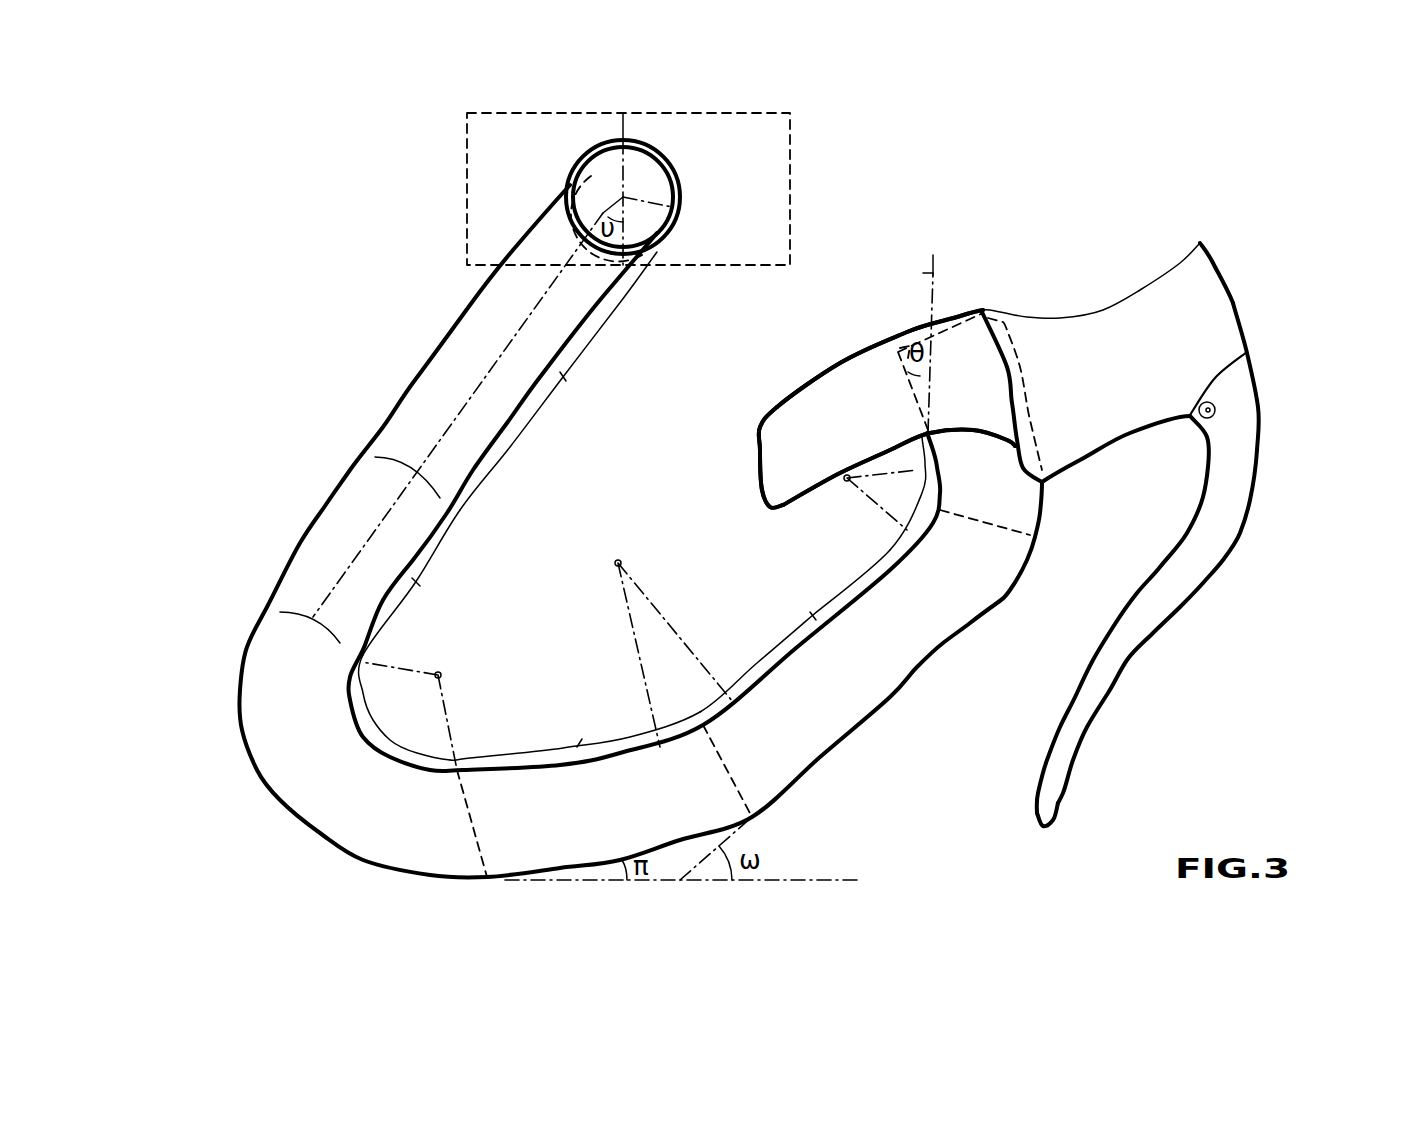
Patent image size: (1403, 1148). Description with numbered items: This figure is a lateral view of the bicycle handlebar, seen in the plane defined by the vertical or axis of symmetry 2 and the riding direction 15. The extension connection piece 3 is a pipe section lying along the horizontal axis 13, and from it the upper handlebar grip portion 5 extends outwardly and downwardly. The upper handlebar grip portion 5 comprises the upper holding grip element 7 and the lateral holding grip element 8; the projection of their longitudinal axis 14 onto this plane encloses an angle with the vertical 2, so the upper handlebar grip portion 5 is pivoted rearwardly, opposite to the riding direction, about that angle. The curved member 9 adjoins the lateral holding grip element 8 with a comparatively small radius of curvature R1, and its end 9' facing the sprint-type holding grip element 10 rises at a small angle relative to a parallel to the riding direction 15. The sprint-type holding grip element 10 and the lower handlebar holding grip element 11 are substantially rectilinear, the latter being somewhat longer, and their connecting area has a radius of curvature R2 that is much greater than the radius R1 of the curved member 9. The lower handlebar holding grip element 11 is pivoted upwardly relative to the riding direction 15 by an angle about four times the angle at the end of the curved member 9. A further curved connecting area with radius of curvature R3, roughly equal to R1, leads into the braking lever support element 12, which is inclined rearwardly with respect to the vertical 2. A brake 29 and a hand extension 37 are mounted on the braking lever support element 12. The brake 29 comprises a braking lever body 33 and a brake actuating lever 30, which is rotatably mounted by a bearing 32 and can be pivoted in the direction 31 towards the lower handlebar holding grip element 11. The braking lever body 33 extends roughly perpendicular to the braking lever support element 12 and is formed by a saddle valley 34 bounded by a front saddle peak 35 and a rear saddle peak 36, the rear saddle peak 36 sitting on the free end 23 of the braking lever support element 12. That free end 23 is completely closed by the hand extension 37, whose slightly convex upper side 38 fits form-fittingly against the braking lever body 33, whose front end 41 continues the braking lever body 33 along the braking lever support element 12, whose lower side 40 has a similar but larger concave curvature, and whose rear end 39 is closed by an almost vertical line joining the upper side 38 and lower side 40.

The axis of symmetry 2 is at (466, 190).
The extension connection piece 3 is at (683, 182).
The upper handlebar grip portion 5 is at (323, 498).
The upper holding grip element 7 is at (566, 381).
The lateral holding grip element 8 is at (420, 586).
The curved member 9 is at (404, 707).
The end of the curved member 9' is at (498, 845).
The sprint-type holding grip element 10 is at (586, 747).
The lower handlebar holding grip element 11 is at (816, 613).
The braking lever support element 12 is at (923, 472).
The horizontal axis 13 is at (672, 207).
The longitudinal axis 14 is at (477, 378).
The riding direction 15 is at (740, 112).
The free end of the braking lever support element 23 is at (960, 320).
The brake 29 is at (1220, 580).
The brake actuating lever 30 is at (1153, 593).
The pivoting direction 31 is at (965, 753).
The bearing 32 is at (1195, 422).
The braking lever body 33 is at (1187, 300).
The saddle valley 34 is at (1105, 318).
The front saddle peak 35 is at (1200, 243).
The rear saddle peak 36 is at (1000, 310).
The hand extension 37 is at (803, 372).
The upper side of the hand extension 38 is at (847, 357).
The rear end of the hand extension 39 is at (757, 493).
The lower side of the hand extension 40 is at (867, 453).
The front end of the hand extension 41 is at (1017, 398).
The radius of curvature of the curved member R1 is at (450, 688).
The radius of curvature of the connecting area R2 is at (668, 612).
The radius of curvature of the connecting area to the braking lever support element R3 is at (878, 524).